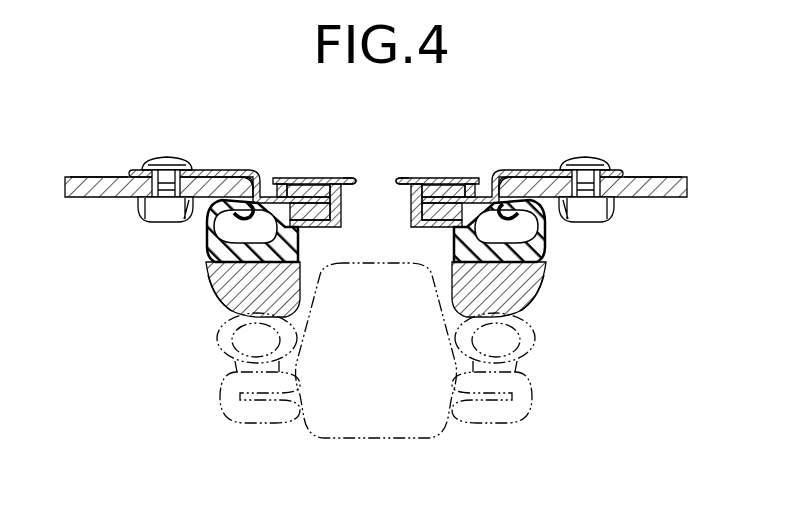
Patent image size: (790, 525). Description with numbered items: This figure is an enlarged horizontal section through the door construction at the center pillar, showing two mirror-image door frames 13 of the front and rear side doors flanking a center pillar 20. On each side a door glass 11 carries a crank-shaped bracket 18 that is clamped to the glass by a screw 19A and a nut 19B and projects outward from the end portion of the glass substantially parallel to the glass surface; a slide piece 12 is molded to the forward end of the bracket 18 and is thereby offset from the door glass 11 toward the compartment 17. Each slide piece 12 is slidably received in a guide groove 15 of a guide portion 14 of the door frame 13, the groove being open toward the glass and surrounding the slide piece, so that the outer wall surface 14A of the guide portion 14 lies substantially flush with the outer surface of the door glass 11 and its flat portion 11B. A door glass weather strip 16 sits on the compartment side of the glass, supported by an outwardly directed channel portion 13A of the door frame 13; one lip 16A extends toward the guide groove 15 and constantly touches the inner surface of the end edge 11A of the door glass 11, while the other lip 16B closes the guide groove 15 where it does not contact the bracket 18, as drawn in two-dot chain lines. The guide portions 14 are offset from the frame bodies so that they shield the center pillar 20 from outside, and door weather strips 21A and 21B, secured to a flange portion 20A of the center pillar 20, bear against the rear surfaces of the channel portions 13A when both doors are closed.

The door glass 11 is at (76, 177).
The end edge of the door glass 11A is at (253, 178).
The flat portion of roof panel 11B is at (102, 176).
The slide piece 12 is at (303, 178).
The door frame 13 is at (371, 309).
The outwardly directed channel portion 13A is at (223, 305).
The guide portion 14 is at (338, 222).
The outer wall surface of the guide portion 14A is at (404, 177).
The guide groove 15 is at (320, 178).
The door glass weather strip 16 is at (378, 200).
The lip of the door glass weather strip 16A is at (217, 203).
The other lip of the door glass weather strip 16B is at (270, 196).
The compartment 17 is at (375, 362).
The bracket 18 is at (200, 170).
The screw 19A is at (158, 158).
The nut 19B is at (140, 212).
The center pillar 20 is at (376, 334).
The flange portion of the center pillar 20A is at (263, 416).
The door weather strip 21A is at (227, 345).
The door weather strip 21B is at (535, 345).